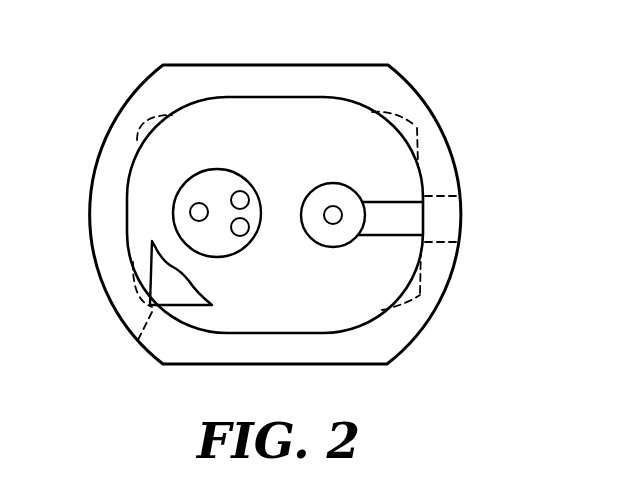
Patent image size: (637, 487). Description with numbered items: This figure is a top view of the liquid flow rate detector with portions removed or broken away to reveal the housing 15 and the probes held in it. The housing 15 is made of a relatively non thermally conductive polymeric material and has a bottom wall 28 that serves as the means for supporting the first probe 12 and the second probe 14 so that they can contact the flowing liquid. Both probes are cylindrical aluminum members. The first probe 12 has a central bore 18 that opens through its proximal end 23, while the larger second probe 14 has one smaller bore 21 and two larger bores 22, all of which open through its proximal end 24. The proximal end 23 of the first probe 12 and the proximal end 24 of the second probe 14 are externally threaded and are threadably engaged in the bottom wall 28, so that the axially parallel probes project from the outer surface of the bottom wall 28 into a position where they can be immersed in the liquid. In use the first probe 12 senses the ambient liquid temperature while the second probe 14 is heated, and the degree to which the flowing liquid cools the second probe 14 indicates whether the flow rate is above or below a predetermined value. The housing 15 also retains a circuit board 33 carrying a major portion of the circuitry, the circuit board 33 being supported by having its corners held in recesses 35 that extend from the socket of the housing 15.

The first probe 12 is at (330, 248).
The second probe 14 is at (213, 180).
The housing 15 is at (405, 78).
The central bore 18 is at (334, 210).
The bore 21 is at (195, 208).
The bores 22 is at (244, 222).
The proximal end 23 is at (345, 233).
The proximal end 24 is at (222, 253).
The bottom wall 28 is at (278, 322).
The circuit board 33 is at (153, 250).
The recesses 35 is at (436, 112).